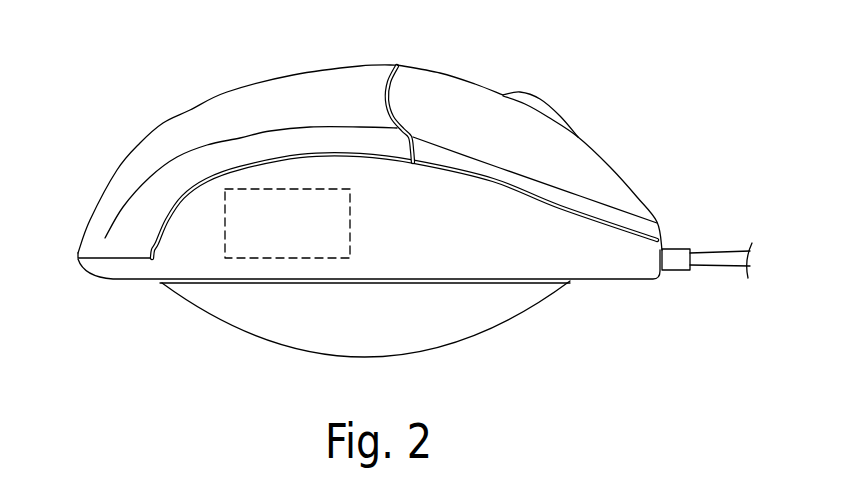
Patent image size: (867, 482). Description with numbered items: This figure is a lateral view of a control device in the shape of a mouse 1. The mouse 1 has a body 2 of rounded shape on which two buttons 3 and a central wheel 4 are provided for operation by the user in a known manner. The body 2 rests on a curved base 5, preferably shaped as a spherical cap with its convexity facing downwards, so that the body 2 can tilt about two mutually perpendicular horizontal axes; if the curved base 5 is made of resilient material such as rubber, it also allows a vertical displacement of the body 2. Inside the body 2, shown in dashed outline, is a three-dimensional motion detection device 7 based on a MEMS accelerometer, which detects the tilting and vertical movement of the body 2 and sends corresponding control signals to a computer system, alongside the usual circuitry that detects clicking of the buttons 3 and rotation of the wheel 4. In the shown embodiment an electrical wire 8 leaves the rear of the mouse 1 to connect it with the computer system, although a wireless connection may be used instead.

The mouse 1 is at (548, 62).
The body 2 is at (233, 107).
The buttons 3 is at (438, 100).
The central wheel 4 is at (563, 110).
The curved base 5 is at (500, 310).
The 3D-motion detection device 7 is at (284, 198).
The electrical wire 8 is at (668, 257).